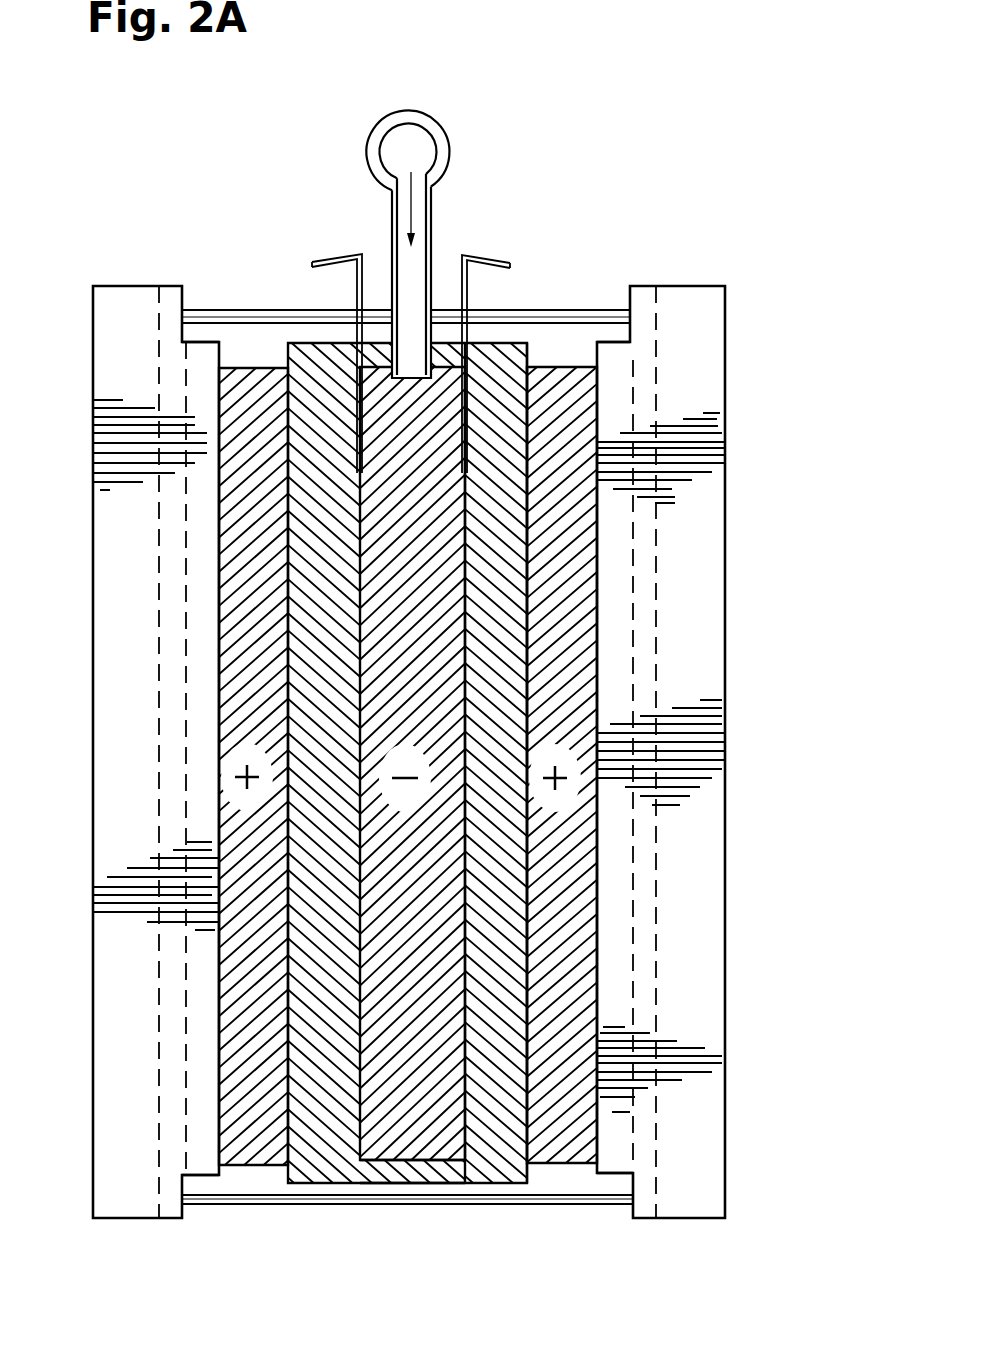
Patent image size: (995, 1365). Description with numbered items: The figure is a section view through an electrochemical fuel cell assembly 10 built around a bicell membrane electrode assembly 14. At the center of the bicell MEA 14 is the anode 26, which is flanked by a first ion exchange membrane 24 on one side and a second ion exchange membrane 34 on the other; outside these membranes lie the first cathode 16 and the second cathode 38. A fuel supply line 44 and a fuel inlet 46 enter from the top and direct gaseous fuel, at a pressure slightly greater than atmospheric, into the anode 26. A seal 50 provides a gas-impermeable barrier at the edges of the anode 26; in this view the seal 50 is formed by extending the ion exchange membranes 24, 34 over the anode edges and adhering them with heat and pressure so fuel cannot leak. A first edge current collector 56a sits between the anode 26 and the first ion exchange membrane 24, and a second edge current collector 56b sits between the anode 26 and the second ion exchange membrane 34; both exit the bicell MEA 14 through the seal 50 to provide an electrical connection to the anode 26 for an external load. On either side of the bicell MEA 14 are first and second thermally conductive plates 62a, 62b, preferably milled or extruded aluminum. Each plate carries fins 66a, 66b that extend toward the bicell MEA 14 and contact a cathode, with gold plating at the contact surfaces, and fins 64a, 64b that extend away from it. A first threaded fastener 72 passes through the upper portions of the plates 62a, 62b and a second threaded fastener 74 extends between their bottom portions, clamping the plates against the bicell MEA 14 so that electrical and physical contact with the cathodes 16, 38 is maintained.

The electrochemical fuel cell assembly 10 is at (683, 175).
The bicell membrane electrode assembly 14 is at (383, 740).
The first cathode 16 is at (257, 373).
The first ion exchange membrane 24 is at (310, 346).
The anode 26 is at (386, 372).
The second ion exchange membrane 34 is at (505, 346).
The second cathode 38 is at (547, 370).
The fuel supply line 44 is at (466, 150).
The fuel inlet 46 is at (390, 196).
The seal 50 is at (372, 1186).
The first edge current collector 56a is at (312, 263).
The second edge current collector 56b is at (472, 250).
The first thermally conductive plate 62a is at (173, 1132).
The second thermally conductive plate 62b is at (645, 366).
The fins 64a is at (106, 810).
The fins 64b is at (710, 557).
The fins 66a is at (197, 937).
The fins 66b is at (612, 1112).
The first threaded fastener 72 is at (612, 313).
The second threaded fastener 74 is at (612, 1203).